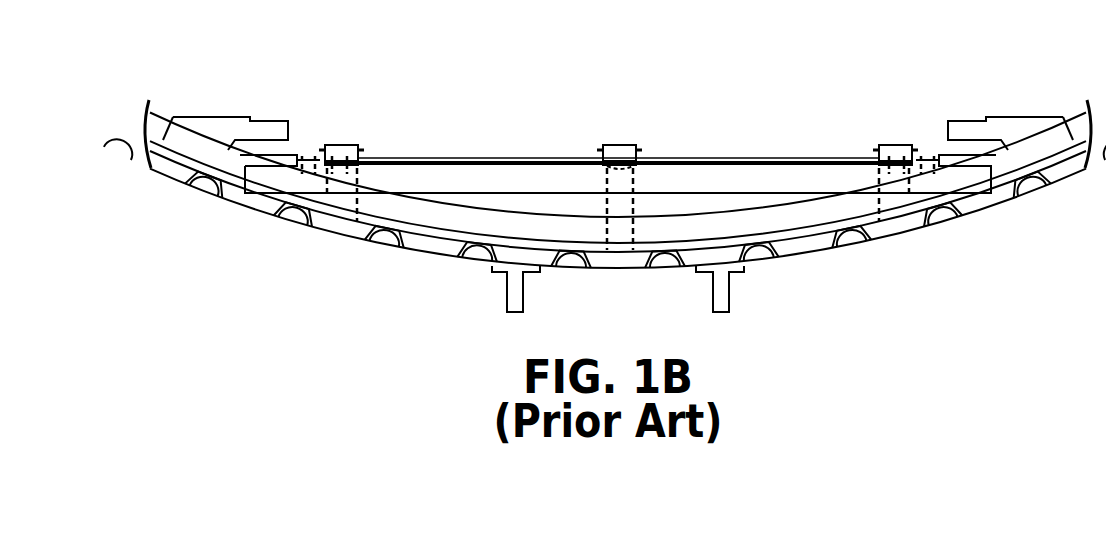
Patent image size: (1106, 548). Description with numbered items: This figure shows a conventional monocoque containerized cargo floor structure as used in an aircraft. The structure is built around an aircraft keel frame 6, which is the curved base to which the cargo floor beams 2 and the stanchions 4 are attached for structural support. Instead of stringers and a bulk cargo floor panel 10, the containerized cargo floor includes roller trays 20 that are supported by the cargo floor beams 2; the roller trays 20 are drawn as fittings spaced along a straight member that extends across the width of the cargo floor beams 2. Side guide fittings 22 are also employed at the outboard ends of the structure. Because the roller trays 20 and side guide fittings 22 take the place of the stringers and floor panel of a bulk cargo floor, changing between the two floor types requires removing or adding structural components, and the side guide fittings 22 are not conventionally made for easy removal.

The cargo floor beam 2 is at (778, 175).
The stanchion 4 is at (362, 190).
The aircraft keel frame 6 is at (457, 220).
The bulk cargo floor panel 10 is at (515, 157).
The roller tray 20 is at (345, 144).
The side guide fitting 22 is at (220, 113).